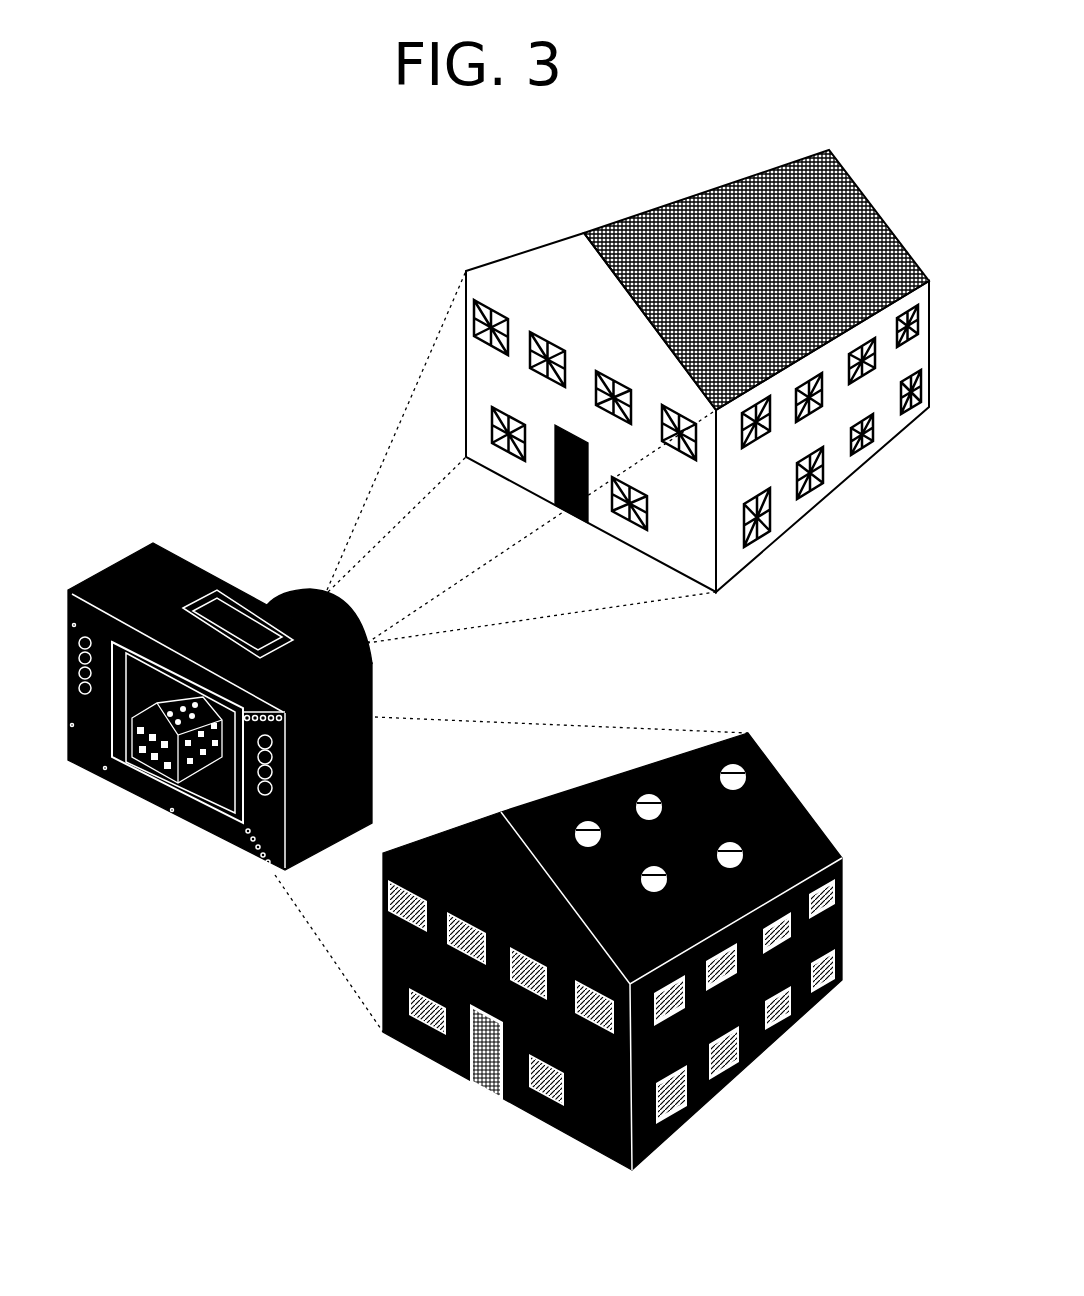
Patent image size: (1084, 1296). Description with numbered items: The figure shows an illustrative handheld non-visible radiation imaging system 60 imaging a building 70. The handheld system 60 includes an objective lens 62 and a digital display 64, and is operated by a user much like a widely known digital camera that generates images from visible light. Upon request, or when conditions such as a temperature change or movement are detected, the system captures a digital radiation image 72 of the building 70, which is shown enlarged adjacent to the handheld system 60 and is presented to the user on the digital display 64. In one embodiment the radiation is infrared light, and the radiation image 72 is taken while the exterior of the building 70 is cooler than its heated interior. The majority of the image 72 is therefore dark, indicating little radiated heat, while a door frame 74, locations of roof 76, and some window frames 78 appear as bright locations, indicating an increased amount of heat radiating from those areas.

The handheld non-visible radiation imaging system 60 is at (120, 568).
The objective lens 62 is at (313, 590).
The digital display 64 is at (220, 812).
The building 70 is at (651, 220).
The digital radiation image 72 is at (147, 767).
The door frame 74 is at (473, 1063).
The locations of roof 76 is at (648, 796).
The window frames 78 is at (842, 940).